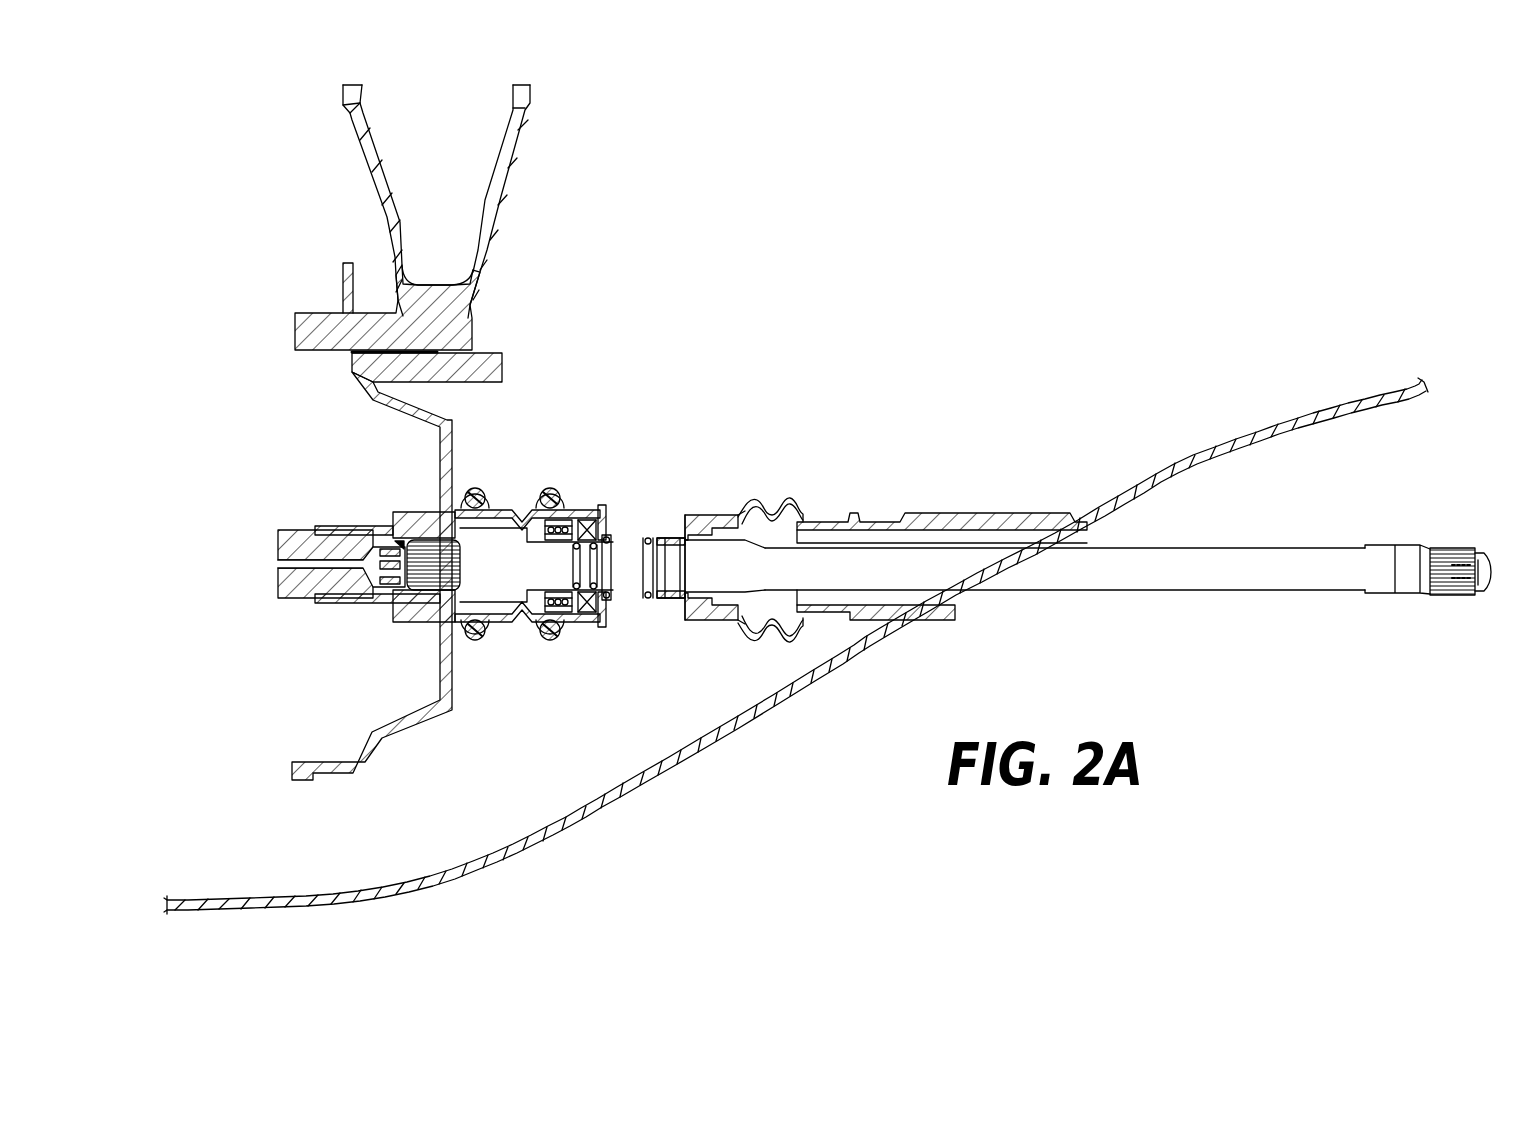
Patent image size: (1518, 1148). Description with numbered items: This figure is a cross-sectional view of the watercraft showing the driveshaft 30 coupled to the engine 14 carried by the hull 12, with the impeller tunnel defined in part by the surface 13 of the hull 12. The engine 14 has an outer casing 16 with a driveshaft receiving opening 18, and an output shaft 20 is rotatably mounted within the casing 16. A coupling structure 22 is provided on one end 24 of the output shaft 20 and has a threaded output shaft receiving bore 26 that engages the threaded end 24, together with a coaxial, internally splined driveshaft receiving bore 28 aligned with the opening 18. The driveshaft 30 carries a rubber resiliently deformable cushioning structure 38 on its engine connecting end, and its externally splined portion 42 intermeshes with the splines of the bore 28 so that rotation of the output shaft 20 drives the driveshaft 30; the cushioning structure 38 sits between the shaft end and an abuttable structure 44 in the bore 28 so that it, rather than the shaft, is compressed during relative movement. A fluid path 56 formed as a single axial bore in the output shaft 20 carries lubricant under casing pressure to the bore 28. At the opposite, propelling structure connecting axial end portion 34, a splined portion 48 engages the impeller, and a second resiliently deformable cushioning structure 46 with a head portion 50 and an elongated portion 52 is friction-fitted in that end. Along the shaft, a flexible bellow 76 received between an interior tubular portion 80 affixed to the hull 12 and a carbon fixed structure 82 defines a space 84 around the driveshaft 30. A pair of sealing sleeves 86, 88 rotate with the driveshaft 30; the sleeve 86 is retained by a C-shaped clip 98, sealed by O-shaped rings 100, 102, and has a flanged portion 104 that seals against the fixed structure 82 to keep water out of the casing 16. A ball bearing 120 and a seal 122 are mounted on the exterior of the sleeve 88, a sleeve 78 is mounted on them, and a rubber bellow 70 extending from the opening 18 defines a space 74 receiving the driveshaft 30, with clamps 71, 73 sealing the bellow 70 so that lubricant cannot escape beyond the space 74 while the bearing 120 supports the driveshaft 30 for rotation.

The hull 12 is at (672, 771).
The surface 13 is at (792, 702).
The engine 14 is at (481, 331).
The outer casing 16 is at (452, 440).
The driveshaft receiving opening 18 is at (485, 600).
The output shaft 20 is at (292, 597).
The coupling structure 22 is at (362, 528).
The one end of the output shaft 24 is at (352, 602).
The output shaft receiving bore 26 is at (340, 527).
The driveshaft receiving bore 28 is at (432, 610).
The driveshaft 30 is at (866, 560).
The propelling structure connecting axial end portion 34 is at (1432, 530).
The resiliently deformable cushioning structure 38 is at (388, 584).
The splined portion 42 is at (418, 560).
The abuttable structure 44 is at (396, 540).
The second resiliently deformable cushioning structure 46 is at (1488, 552).
The splined portion 48 is at (1432, 550).
The head portion 50 is at (1487, 592).
The elongated portion 52 is at (1462, 573).
The fluid path 56 is at (282, 565).
The rubber bellow 70 is at (560, 508).
The clamp 71 is at (475, 487).
The clamp 73 is at (548, 487).
The space 74 is at (548, 641).
The flexible bellow 76 is at (771, 503).
The sleeve 78 is at (590, 518).
The interior tubular portion 80 is at (851, 512).
The fixed structure 82 is at (702, 520).
The space 84 is at (746, 516).
The sealing sleeve 86 is at (650, 536).
The sealing sleeve 88 is at (592, 600).
The C-shaped clip 98 is at (650, 546).
The O-shaped ring 100 is at (665, 552).
The O-shaped ring 102 is at (690, 546).
The flanged portion 104 is at (690, 518).
The ball bearing 120 is at (548, 520).
The seal 122 is at (602, 510).